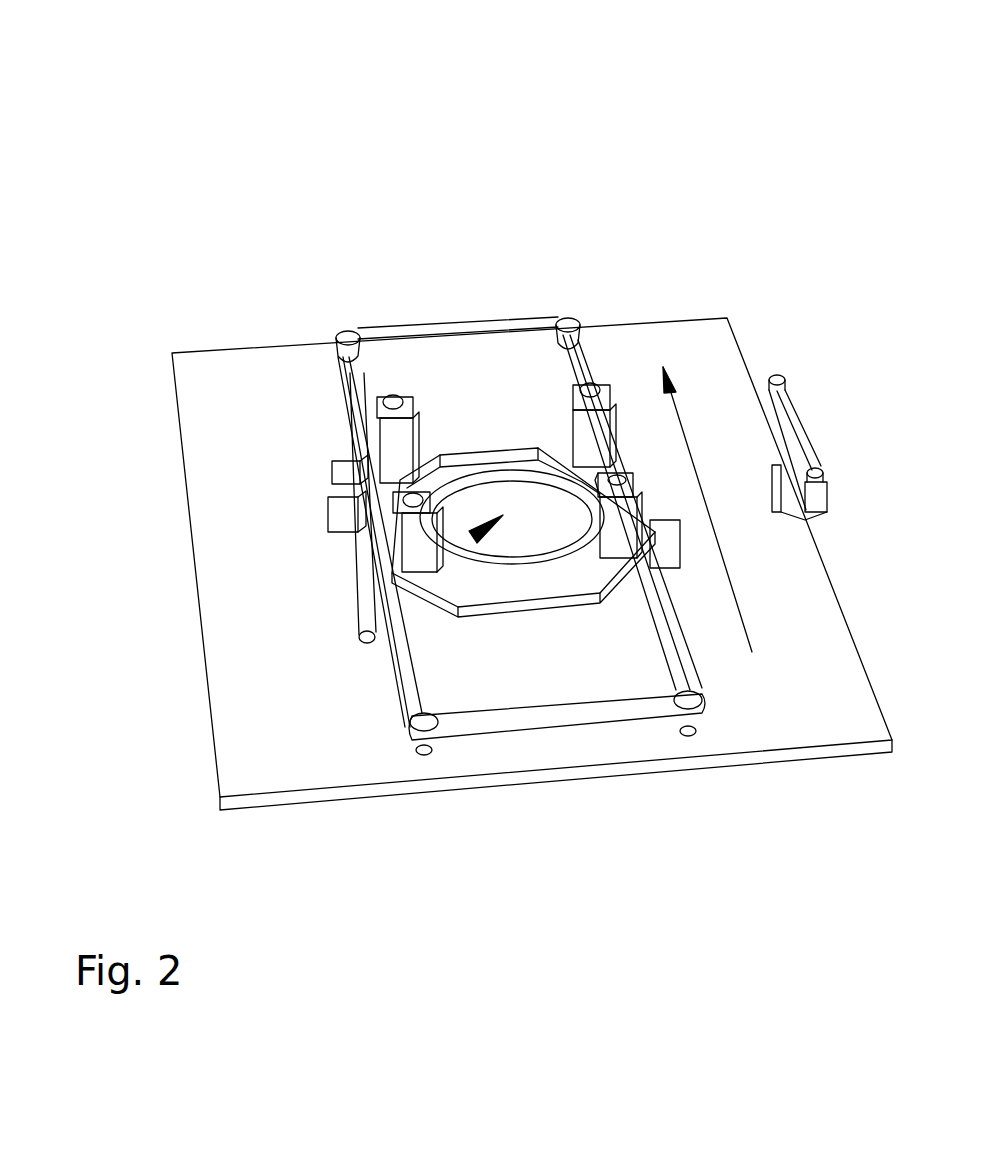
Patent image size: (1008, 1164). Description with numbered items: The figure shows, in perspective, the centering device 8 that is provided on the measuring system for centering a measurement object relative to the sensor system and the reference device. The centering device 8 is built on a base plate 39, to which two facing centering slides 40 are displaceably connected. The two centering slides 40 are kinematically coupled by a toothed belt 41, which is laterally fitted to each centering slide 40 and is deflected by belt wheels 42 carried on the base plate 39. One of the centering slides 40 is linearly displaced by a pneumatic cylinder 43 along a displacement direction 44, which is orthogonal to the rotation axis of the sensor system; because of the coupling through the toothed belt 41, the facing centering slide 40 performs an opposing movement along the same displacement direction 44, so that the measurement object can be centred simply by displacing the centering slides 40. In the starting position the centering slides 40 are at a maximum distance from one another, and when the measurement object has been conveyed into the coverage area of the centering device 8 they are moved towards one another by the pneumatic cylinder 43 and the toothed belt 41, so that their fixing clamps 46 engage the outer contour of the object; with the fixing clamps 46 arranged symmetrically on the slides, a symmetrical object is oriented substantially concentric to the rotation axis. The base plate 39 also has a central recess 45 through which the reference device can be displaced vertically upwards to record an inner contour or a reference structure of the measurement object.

The centering device 8 is at (713, 197).
The base plate 39 is at (795, 735).
The centering slide 40 is at (484, 433).
The toothed belt 41 is at (425, 328).
The belt wheel 42 is at (347, 328).
The pneumatic cylinder 43 is at (358, 580).
The displacement direction 44 is at (745, 607).
The central recess 45 is at (473, 537).
The fixing clamp 46 is at (402, 413).